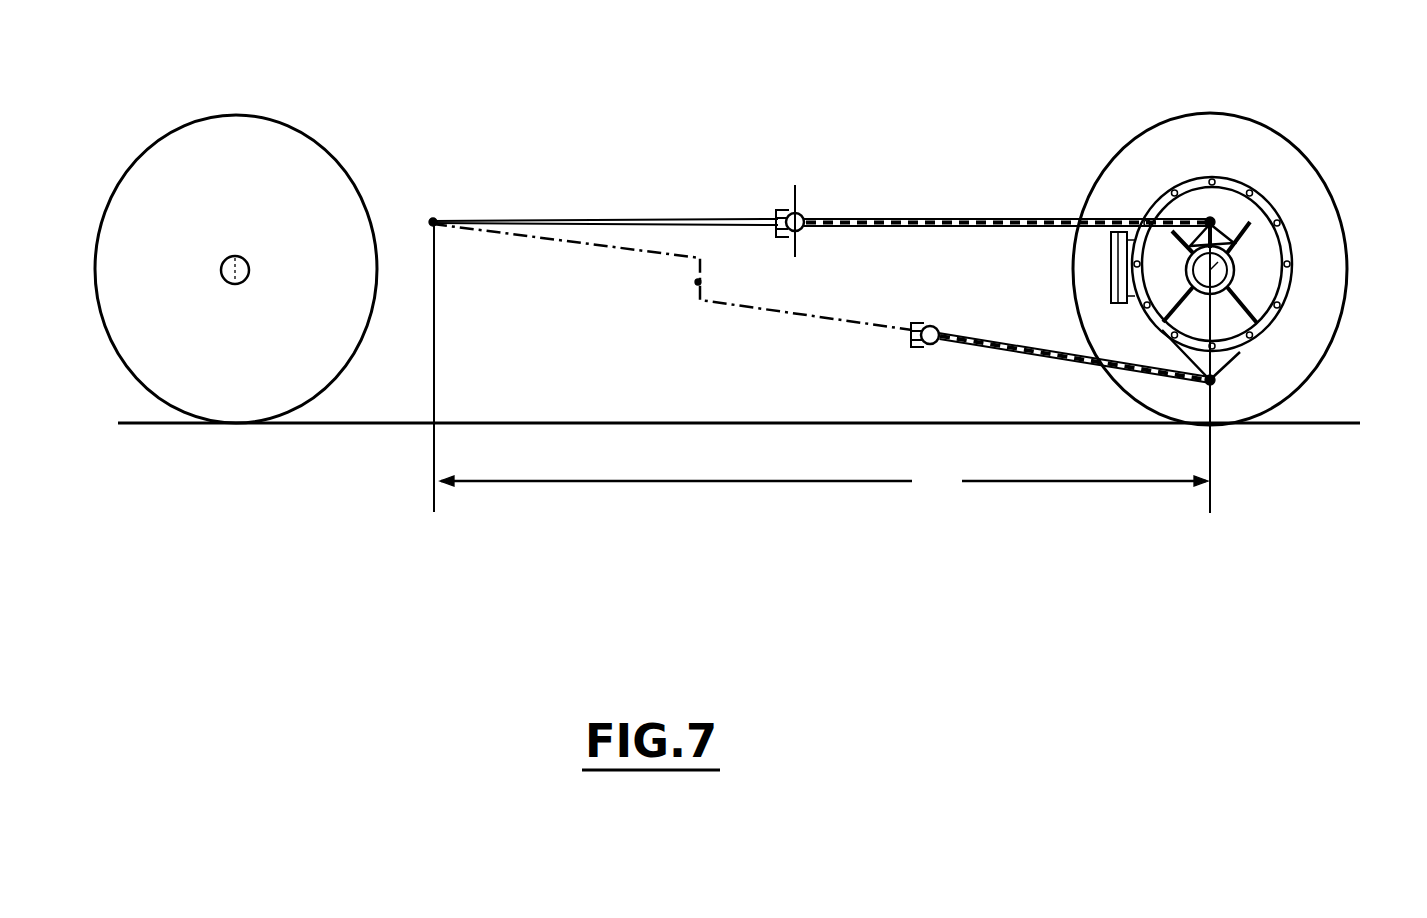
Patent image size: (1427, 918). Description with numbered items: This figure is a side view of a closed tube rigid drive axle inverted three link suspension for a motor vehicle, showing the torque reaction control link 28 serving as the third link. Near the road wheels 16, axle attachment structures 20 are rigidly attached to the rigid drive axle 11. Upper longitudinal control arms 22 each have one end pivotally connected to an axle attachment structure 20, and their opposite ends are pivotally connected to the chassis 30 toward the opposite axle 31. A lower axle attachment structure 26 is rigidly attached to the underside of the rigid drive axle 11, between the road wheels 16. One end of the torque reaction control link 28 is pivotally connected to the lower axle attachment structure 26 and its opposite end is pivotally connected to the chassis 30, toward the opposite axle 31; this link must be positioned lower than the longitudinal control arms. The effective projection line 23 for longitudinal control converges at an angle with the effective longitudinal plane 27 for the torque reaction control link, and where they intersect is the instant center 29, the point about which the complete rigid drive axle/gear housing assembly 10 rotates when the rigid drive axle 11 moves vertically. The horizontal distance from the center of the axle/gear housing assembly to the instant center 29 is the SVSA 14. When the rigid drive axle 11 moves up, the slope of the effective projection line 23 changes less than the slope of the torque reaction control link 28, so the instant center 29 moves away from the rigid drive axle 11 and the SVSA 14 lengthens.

The rigid drive axle/gear housing assembly 10 is at (1230, 178).
The rigid drive axle 11 is at (1234, 258).
The SVSA 14 is at (824, 482).
The road wheels 16 is at (340, 166).
The axle attachment structure 20 is at (1232, 241).
The upper longitudinal control arm 22 is at (966, 218).
The effective projection line for longitudinal control 23 is at (633, 219).
The lower axle attachment structure 26 is at (1222, 362).
The effective longitudinal plane for the torque reaction control link 27 is at (603, 249).
The torque reaction control link 28 is at (1022, 355).
The instant center 29 is at (436, 220).
The chassis 30 is at (803, 211).
The opposite axle 31 is at (235, 255).